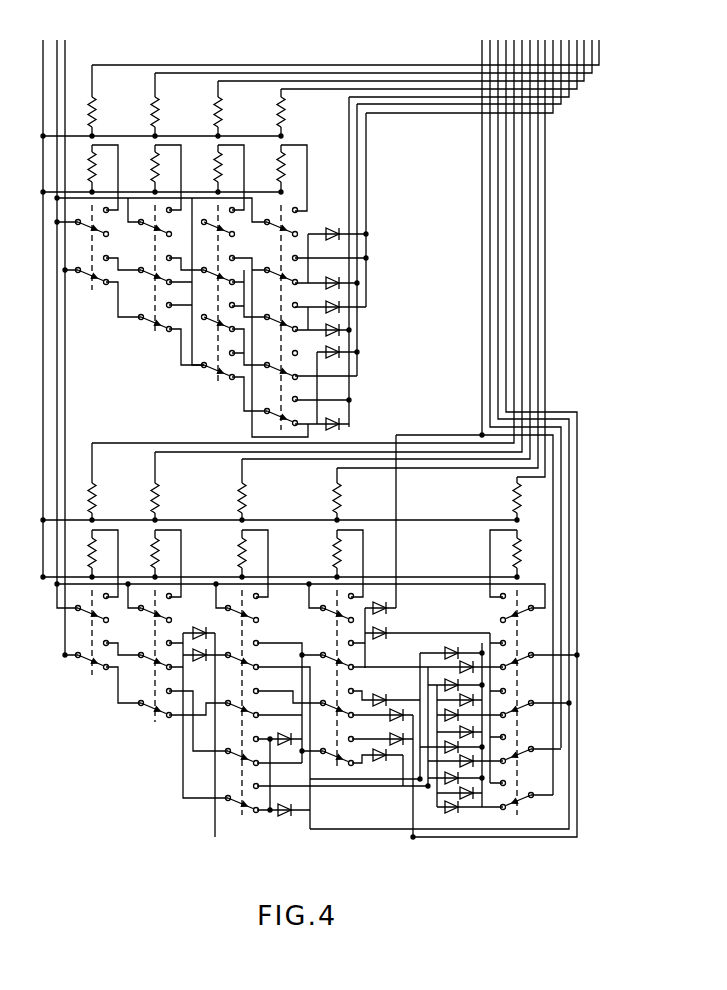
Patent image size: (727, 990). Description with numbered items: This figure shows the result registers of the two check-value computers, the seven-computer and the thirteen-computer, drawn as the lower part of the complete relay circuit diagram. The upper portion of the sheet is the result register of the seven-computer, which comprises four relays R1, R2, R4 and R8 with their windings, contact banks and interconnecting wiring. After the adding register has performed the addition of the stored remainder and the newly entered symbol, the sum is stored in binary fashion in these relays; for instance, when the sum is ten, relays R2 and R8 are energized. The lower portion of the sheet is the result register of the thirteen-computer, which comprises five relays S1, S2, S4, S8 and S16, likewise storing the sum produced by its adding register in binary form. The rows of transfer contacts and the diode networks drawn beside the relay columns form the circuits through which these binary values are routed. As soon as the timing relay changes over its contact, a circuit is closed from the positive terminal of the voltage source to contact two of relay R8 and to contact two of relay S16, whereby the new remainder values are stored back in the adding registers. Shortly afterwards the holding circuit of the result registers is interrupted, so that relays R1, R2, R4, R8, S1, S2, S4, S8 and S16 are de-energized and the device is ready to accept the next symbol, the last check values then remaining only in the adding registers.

The relay R8 is at (105, 100).
The relay R1 is at (168, 104).
The relay R2 is at (231, 108).
The relay R4 is at (294, 112).
The relay S16 is at (109, 481).
The relay S2 is at (168, 486).
The relay S1 is at (255, 489).
The relay S8 is at (350, 494).
The relay S4 is at (505, 498).